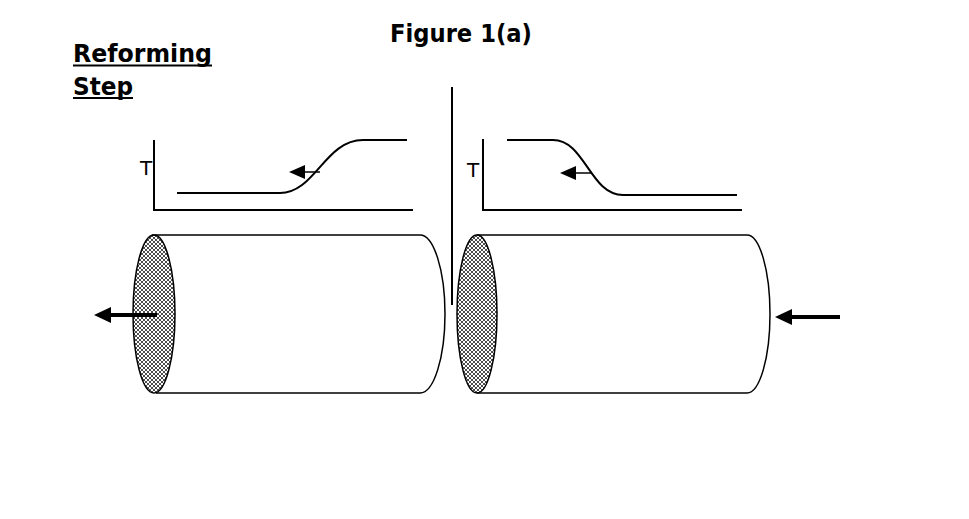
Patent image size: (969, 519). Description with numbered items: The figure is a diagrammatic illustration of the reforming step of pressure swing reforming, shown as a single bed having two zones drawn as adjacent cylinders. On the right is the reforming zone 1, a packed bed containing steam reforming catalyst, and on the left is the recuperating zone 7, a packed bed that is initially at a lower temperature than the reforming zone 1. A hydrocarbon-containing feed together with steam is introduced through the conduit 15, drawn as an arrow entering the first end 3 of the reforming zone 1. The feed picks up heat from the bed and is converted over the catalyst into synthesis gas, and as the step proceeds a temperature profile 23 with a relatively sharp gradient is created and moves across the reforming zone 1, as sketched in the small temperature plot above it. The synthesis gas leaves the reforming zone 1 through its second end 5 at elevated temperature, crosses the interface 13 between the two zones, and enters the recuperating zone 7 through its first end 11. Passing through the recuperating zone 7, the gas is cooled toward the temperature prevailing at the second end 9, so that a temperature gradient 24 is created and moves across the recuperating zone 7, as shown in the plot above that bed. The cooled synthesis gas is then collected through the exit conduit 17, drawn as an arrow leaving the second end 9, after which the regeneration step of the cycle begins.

The reforming zone 1 is at (640, 345).
The first end of the reforming zone 3 is at (753, 357).
The second end of the reforming zone 5 is at (493, 353).
The recuperating zone 7 is at (278, 360).
The second end of the recuperating zone 9 is at (169, 352).
The first end of the recuperating zone 11 is at (430, 357).
The interface 13 is at (452, 183).
The conduit 15 is at (808, 313).
The exit conduit 17 is at (122, 318).
The temperature profile 23 is at (588, 160).
The temperature gradient 24 is at (320, 172).